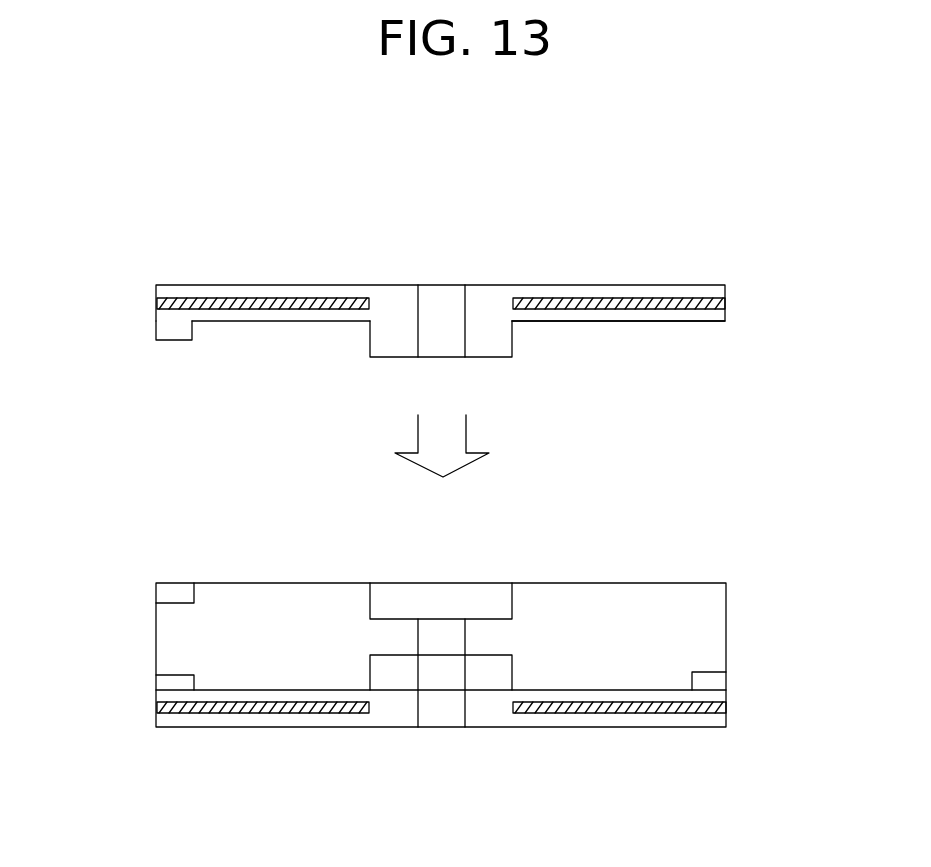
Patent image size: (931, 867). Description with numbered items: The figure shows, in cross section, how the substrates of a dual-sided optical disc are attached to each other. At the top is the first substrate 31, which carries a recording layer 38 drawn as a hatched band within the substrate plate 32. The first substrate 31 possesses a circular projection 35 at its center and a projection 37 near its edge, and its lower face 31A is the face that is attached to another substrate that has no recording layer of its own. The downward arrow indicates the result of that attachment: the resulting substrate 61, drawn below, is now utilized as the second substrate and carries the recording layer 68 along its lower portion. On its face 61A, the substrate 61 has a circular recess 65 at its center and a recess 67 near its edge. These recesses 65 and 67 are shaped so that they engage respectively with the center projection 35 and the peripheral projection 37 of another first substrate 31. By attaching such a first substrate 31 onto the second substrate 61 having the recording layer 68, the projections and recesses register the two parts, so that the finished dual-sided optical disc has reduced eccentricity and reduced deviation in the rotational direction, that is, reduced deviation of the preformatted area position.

The first substrate 31 is at (439, 294).
The substrate plate 32 is at (726, 285).
The recording layer 38 is at (726, 303).
The circular projection 35 is at (370, 337).
The projection 37 is at (155, 330).
The face 31A is at (702, 323).
The substrate 61 is at (440, 672).
The adhesion face 61A is at (695, 583).
The circular recess 65 is at (392, 593).
The recess 67 is at (167, 595).
The recording layer 68 is at (726, 704).